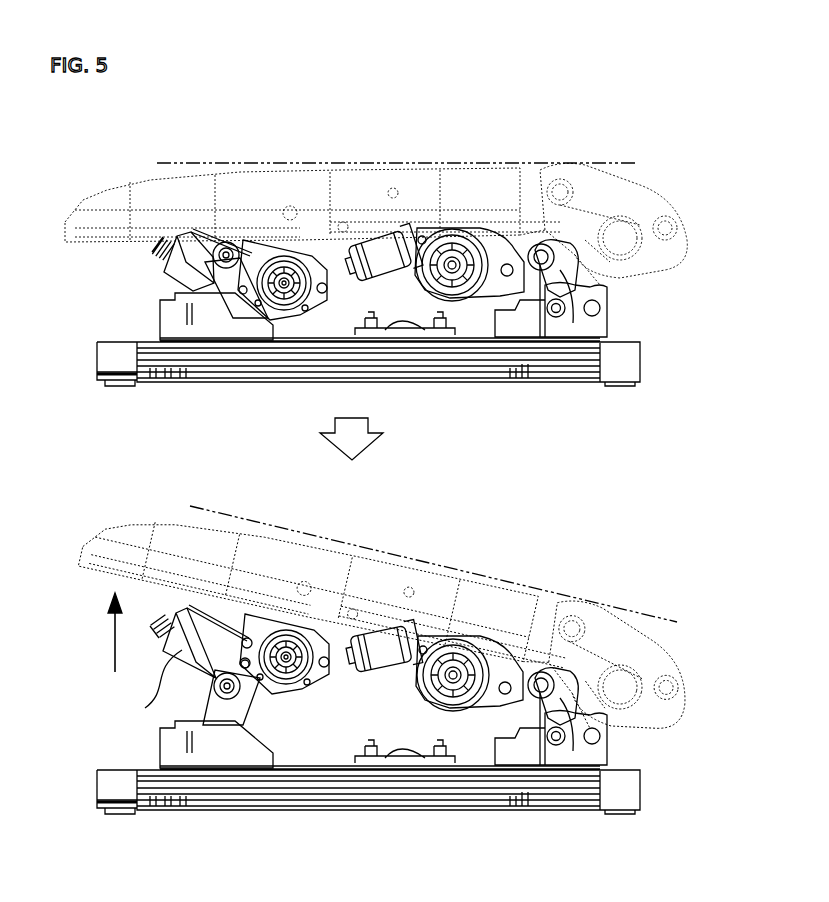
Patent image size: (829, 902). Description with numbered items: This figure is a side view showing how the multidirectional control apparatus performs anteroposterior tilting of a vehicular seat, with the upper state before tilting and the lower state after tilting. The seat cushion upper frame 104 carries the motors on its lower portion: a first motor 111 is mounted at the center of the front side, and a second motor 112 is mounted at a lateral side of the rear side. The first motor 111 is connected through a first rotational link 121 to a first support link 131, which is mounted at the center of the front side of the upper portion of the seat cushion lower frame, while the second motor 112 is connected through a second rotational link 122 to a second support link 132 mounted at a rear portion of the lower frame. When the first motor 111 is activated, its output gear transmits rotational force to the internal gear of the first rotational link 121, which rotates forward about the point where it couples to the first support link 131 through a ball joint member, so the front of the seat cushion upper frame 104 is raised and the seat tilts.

The seat cushion upper frame 104 is at (148, 188).
The first motor 111 is at (178, 275).
The second motor 112 is at (390, 278).
The first rotational link 121 is at (258, 265).
The second rotational link 122 is at (523, 252).
The first support link 131 is at (206, 290).
The second support link 132 is at (585, 283).